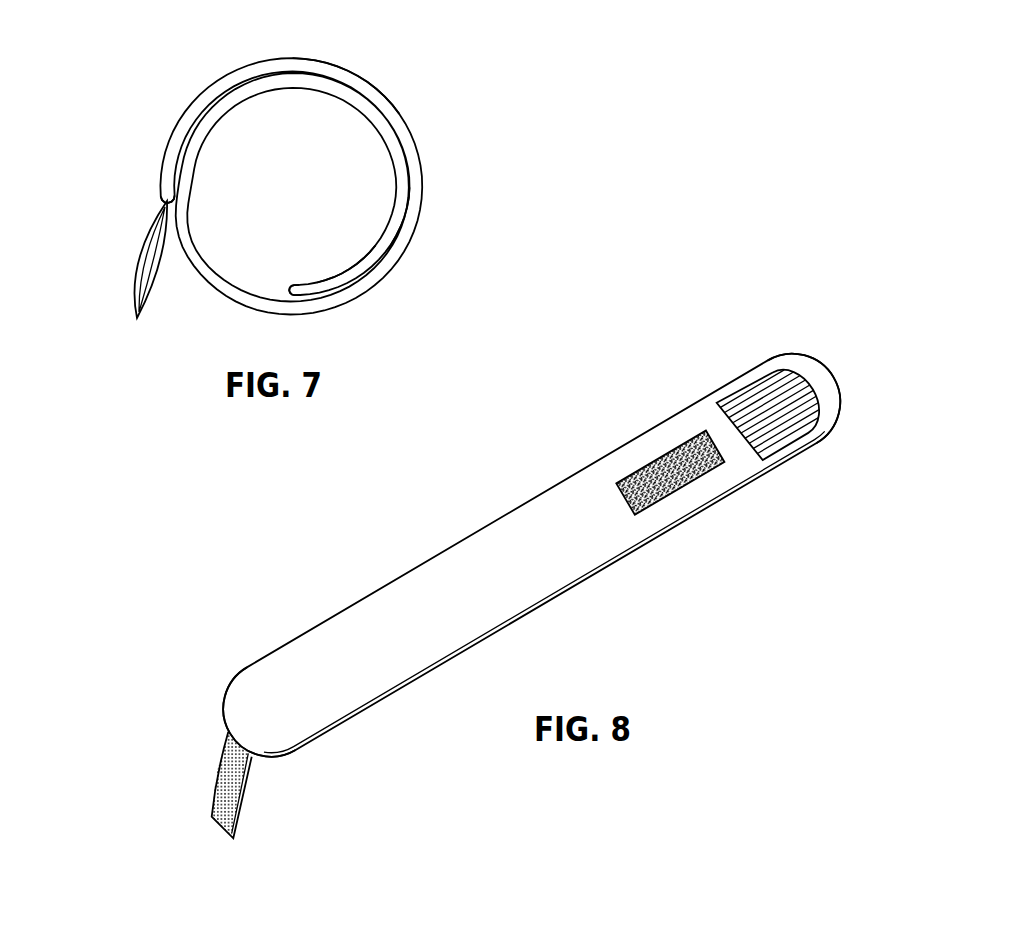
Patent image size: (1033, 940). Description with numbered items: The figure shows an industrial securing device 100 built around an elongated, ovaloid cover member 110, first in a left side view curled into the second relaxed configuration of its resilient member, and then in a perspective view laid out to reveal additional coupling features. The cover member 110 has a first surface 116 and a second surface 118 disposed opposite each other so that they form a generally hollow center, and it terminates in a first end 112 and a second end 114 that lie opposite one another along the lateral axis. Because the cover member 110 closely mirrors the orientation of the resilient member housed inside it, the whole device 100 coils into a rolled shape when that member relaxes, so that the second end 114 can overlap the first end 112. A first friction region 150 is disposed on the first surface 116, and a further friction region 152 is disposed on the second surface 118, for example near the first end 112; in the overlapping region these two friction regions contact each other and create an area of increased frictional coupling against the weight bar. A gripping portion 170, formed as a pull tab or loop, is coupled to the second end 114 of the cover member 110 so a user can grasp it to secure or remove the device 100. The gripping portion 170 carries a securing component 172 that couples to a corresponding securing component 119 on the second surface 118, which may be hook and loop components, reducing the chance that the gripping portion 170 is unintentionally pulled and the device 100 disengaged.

In FIG. 7, the industrial securing device 100 is at (273, 180).
In FIG. 8, the industrial securing device 100 is at (500, 557).
In FIG. 7, the cover member 110 is at (418, 154).
In FIG. 7, the first end 112 is at (271, 273).
In FIG. 8, the first end 112 is at (813, 389).
In FIG. 7, the second end 114 is at (144, 210).
In FIG. 8, the second end 114 is at (251, 720).
In FIG. 7, the first surface 116 is at (405, 167).
In FIG. 7, the second surface 118 is at (383, 92).
In FIG. 8, the second surface 118 is at (532, 555).
In FIG. 8, the securing component 119 is at (670, 473).
In FIG. 7, the first friction region 150 is at (352, 272).
In FIG. 8, the friction region 152 is at (774, 411).
In FIG. 7, the gripping portion 170 is at (136, 294).
In FIG. 8, the gripping portion 170 is at (217, 786).
In FIG. 8, the securing component 172 is at (215, 775).